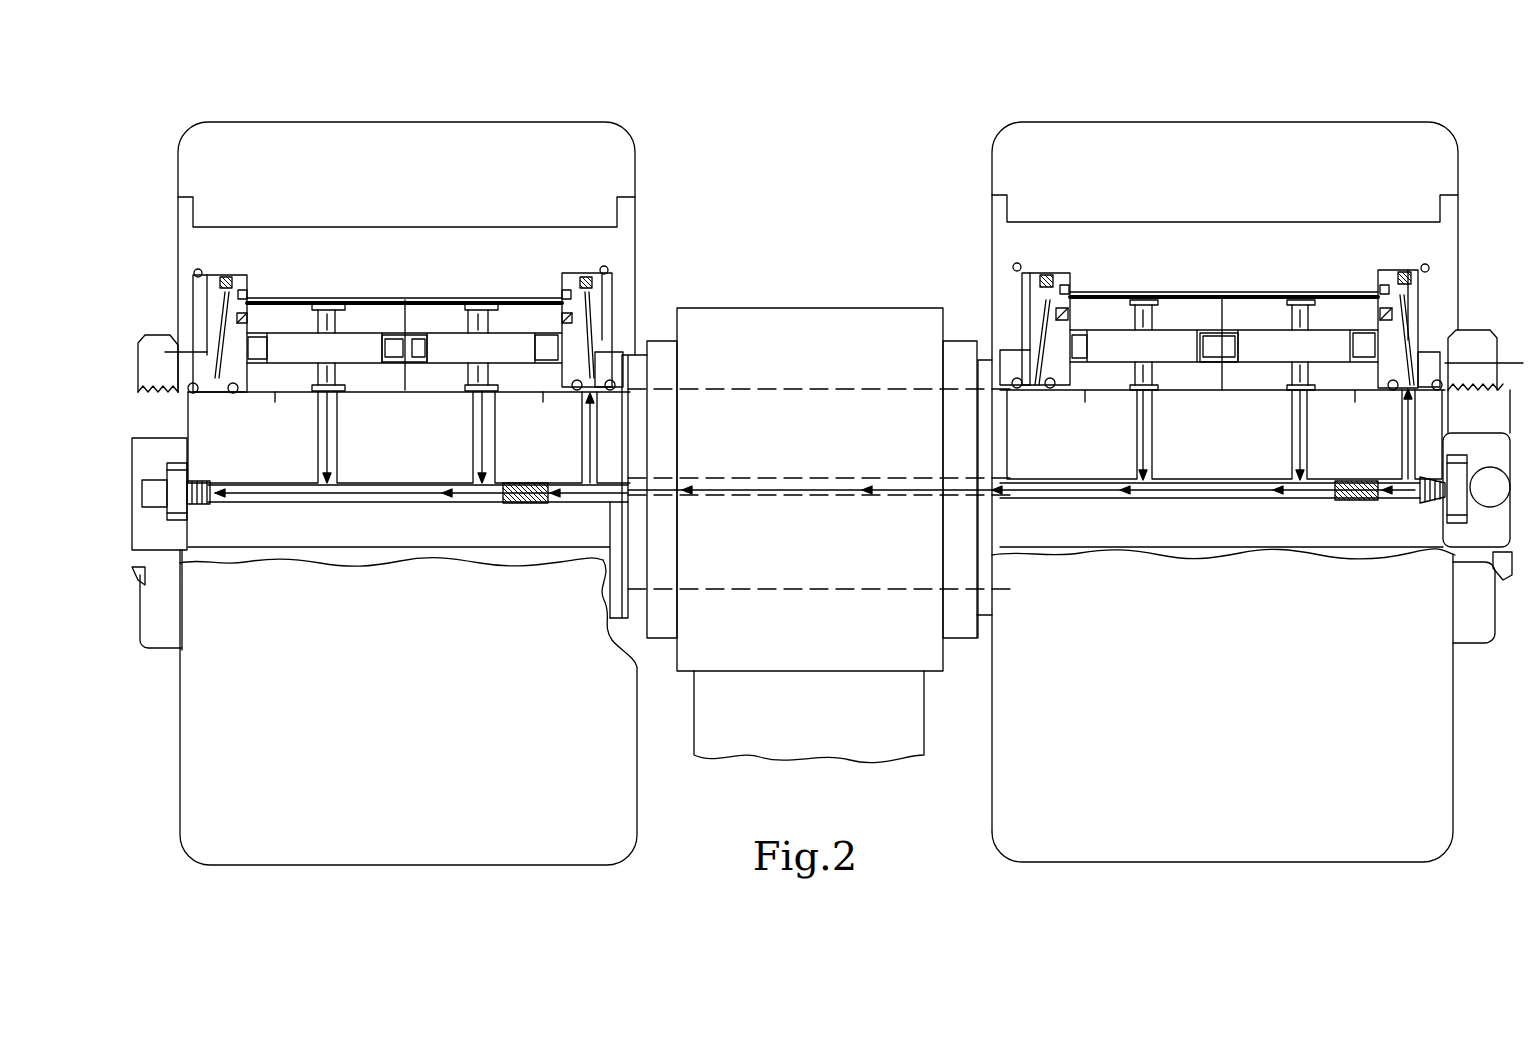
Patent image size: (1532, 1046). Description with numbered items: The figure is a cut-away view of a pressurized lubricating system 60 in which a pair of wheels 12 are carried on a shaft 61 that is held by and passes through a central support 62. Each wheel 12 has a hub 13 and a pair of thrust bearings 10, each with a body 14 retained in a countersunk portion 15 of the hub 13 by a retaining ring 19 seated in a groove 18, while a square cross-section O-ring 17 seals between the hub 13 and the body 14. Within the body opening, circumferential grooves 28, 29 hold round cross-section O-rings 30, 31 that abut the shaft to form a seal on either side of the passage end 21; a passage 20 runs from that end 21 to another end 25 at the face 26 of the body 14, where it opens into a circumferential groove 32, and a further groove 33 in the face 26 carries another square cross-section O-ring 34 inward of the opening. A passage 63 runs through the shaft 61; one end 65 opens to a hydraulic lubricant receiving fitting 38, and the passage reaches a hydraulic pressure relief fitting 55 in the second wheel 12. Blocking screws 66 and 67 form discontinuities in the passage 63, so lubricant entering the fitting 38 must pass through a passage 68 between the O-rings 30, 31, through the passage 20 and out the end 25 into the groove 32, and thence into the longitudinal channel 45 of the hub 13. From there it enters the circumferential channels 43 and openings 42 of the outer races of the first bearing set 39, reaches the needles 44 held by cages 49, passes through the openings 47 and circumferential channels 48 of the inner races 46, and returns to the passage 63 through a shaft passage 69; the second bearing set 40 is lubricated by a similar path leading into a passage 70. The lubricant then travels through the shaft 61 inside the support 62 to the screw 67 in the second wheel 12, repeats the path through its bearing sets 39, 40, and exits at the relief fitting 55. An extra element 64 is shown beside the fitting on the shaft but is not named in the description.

The thrust bearing 10 is at (990, 352).
The wheel 12 is at (417, 122).
The hub 13 is at (381, 261).
The body 14 is at (240, 370).
The countersunk portion 15 is at (238, 285).
The square cross-section O-ring 17 is at (228, 276).
The groove 18 is at (199, 269).
The retaining ring 19 is at (194, 292).
The passage 20 is at (212, 286).
The passage end 21 is at (216, 393).
The passage end 25 is at (247, 292).
The face 26 is at (216, 332).
The circumferential groove 28 is at (190, 386).
The circumferential groove 29 is at (226, 346).
The round cross-section O-ring 30 is at (194, 393).
The round cross-section O-ring 31 is at (233, 393).
The circumferential groove 32 is at (290, 300).
The groove 33 is at (206, 312).
The square cross-section O-ring 34 is at (248, 319).
The hydraulic lubricant receiving fitting 38 is at (1490, 507).
The first bearing set 39 is at (500, 303).
The second bearing set 40 is at (308, 302).
The openings 42 is at (338, 321).
The circumferential channels 43 is at (341, 303).
The needles 44 is at (340, 360).
The longitudinal channel 45 is at (434, 300).
The inner races 46 is at (816, 406).
The openings 47 is at (338, 376).
The circumferential channels 48 is at (320, 396).
The cages 49 is at (267, 348).
The hydraulic pressure relief fitting 55 is at (160, 505).
The pressurized lubricating system 60 is at (636, 203).
The shaft 61 is at (345, 540).
The support 62 is at (786, 645).
The passage 63 is at (432, 502).
The bolt 64 is at (1418, 504).
The passage end 65 is at (208, 504).
The blocking screw 66 is at (1350, 501).
The blocking screw 67 is at (526, 504).
The passage 68 is at (582, 463).
The shaft passage 69 is at (475, 463).
The passage 70 is at (335, 463).